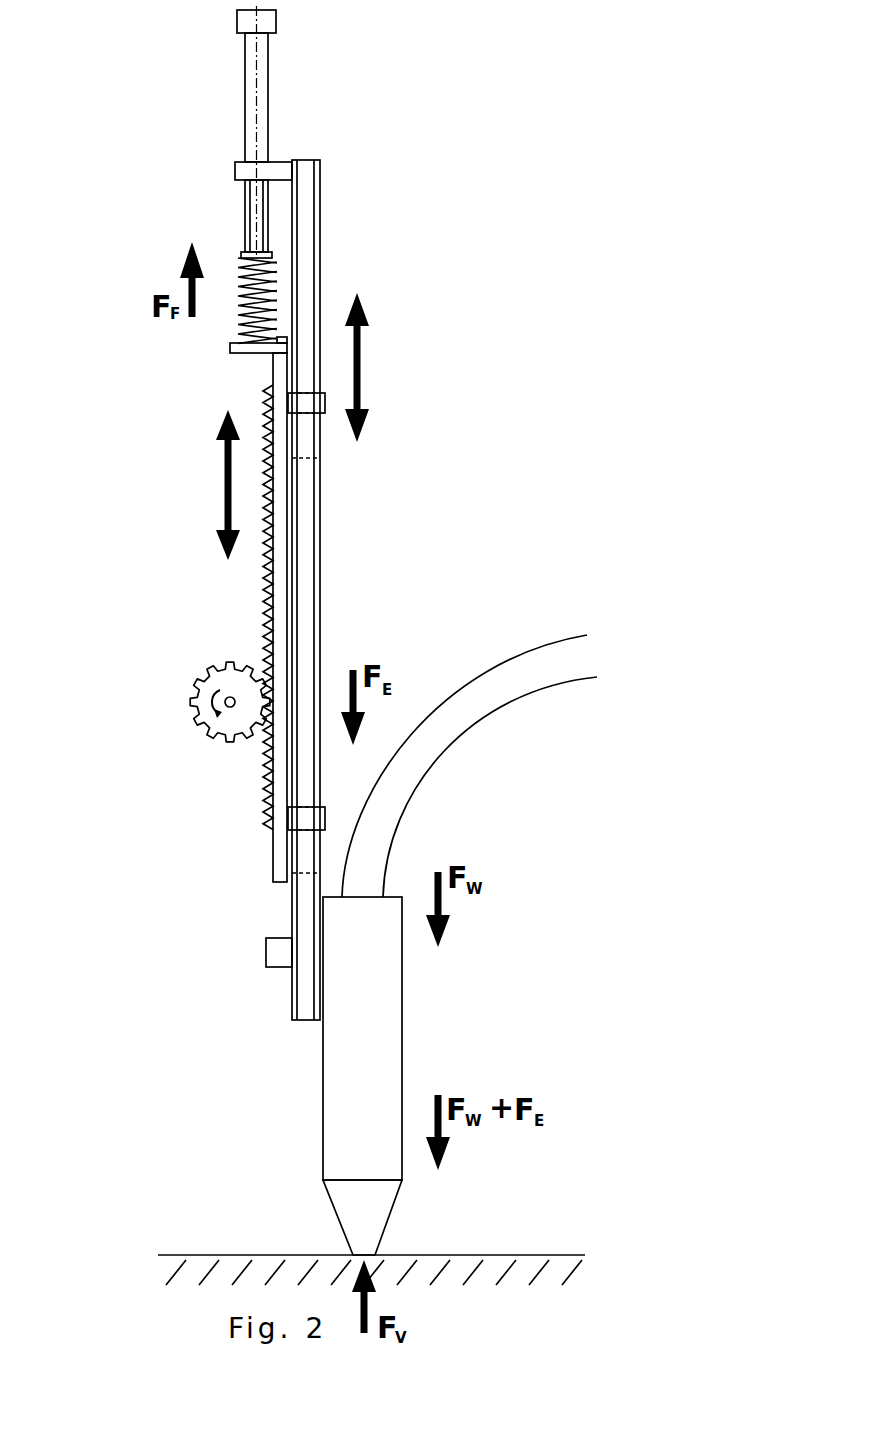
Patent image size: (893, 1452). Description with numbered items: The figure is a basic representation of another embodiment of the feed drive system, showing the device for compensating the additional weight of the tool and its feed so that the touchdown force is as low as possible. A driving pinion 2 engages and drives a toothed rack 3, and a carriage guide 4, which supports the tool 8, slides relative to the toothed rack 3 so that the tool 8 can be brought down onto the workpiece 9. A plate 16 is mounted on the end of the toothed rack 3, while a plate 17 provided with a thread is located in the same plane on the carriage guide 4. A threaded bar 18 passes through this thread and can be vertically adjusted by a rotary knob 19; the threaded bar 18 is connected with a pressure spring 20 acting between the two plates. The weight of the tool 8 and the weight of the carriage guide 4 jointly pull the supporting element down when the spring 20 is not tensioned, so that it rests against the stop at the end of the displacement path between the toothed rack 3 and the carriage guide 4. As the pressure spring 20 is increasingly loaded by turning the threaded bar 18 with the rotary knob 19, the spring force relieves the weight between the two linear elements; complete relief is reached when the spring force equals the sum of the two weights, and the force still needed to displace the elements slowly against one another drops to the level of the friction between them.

The driving pinion 2 is at (207, 720).
The toothed rack 3 is at (273, 830).
The carriage guide 4 is at (308, 573).
The tool 8 is at (367, 1080).
The workpiece 9 is at (527, 1268).
The plate 16 is at (237, 350).
The plate 17 is at (240, 167).
The threaded bar 18 is at (259, 118).
The rotary knob 19 is at (270, 23).
The pressure spring 20 is at (243, 308).